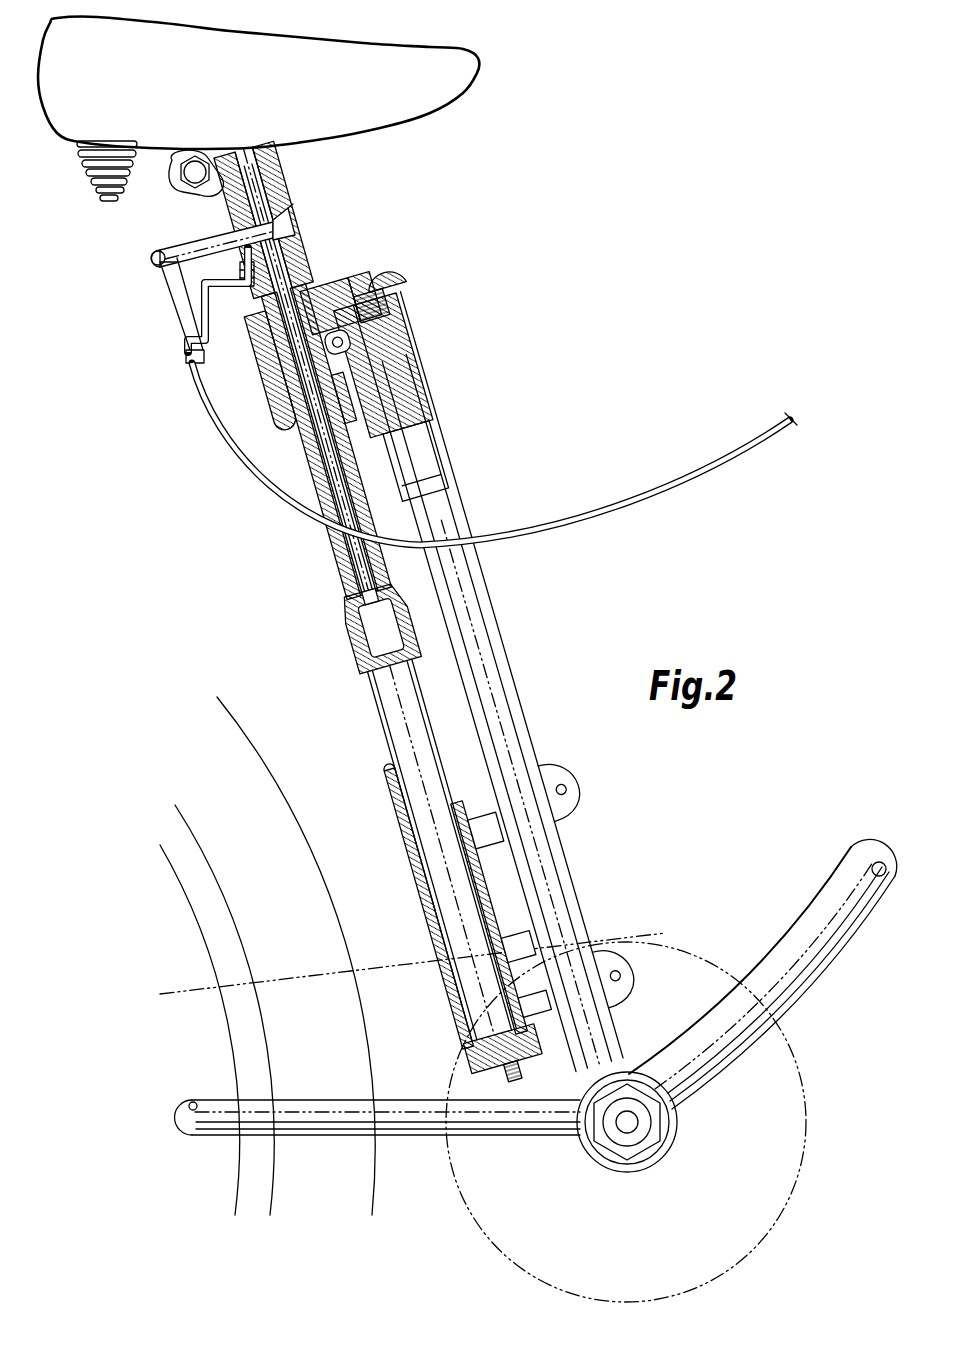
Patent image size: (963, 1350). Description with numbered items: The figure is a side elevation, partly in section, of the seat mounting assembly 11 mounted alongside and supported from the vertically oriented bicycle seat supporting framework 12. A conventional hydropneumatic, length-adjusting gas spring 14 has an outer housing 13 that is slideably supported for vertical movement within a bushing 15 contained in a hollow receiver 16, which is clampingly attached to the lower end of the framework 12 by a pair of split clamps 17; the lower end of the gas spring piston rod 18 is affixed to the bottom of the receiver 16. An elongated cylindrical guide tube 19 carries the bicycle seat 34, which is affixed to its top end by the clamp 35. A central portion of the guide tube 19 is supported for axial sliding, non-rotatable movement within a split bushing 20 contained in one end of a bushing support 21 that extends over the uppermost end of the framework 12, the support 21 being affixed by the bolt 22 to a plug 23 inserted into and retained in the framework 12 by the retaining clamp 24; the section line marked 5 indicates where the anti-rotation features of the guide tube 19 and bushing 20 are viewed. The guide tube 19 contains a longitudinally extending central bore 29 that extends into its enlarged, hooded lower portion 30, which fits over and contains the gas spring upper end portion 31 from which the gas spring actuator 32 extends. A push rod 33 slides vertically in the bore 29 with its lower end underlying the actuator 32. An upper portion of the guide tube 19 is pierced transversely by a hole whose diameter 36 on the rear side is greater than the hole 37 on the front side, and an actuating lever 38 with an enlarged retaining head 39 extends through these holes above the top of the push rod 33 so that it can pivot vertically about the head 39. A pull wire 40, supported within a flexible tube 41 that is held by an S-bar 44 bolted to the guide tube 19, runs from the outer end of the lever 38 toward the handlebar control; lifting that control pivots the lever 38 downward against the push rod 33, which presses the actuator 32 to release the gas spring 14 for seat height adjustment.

The section line 5 is at (271, 430).
The seat mounting assembly 11 is at (262, 424).
The bicycle seat supporting framework 12 is at (478, 714).
The outer housing 13 is at (395, 715).
The gas spring 14 is at (362, 680).
The bushing 15 is at (385, 768).
The hollow receiver 16 is at (408, 842).
The split clamps 17 is at (572, 786).
The gas spring piston rod 18 is at (518, 1058).
The guide tube 19 is at (320, 515).
The split bushing 20 is at (315, 280).
The bushing support 21 is at (356, 272).
The bolt 22 is at (398, 266).
The plug 23 is at (415, 362).
The retaining clamp 24 is at (353, 355).
The central bore 29 is at (335, 478).
The hooded lower portion 30 is at (352, 632).
The gas spring upper end portion 31 is at (375, 633).
The gas spring actuator 32 is at (350, 598).
The push rod 33 is at (292, 372).
The bicycle seat 34 is at (234, 100).
The clamp 35 is at (180, 190).
The hole diameter on rear side 36 is at (298, 216).
The hole on front side 37 is at (245, 258).
The actuating lever 38 is at (240, 231).
The retaining head 39 is at (290, 208).
The pull wire 40 is at (170, 284).
The flexible tube 41 is at (205, 386).
The S-bar 44 is at (200, 305).